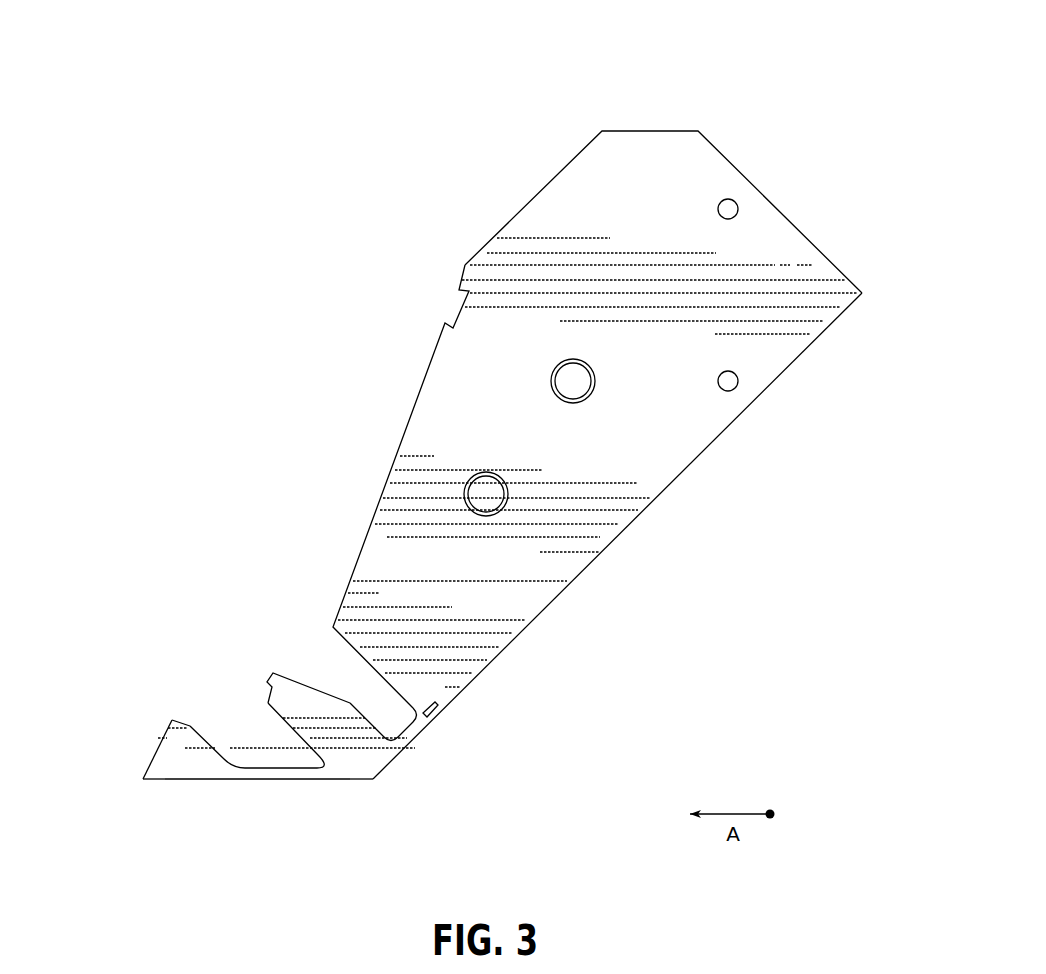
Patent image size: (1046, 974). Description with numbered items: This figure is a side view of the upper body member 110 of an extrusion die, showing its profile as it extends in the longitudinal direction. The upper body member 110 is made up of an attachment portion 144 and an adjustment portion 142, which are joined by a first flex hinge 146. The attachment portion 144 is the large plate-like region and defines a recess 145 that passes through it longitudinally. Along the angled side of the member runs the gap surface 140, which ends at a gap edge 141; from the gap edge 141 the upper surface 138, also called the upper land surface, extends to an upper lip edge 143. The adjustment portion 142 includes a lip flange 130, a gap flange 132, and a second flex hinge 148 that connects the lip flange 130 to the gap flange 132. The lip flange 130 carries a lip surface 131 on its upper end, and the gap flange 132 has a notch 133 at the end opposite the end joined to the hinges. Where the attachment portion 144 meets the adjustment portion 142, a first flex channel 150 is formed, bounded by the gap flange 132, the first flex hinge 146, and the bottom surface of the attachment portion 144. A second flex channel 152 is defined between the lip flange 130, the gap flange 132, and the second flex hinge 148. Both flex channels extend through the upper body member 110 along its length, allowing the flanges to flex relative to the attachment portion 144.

The upper body member 110 is at (822, 130).
The attachment portion 144 is at (673, 449).
The recess 145 is at (452, 302).
The gap surface 140 is at (392, 763).
The first flex hinge 146 is at (422, 733).
The first flex channel 150 is at (345, 672).
The gap flange 132 is at (308, 678).
The notch 133 is at (270, 668).
The second flex channel 152 is at (253, 732).
The adjustment portion 142 is at (328, 770).
The lip surface 131 is at (170, 718).
The lip flange 130 is at (158, 737).
The upper lip edge 143 is at (142, 780).
The upper surface 138 is at (220, 779).
The second flex hinge 148 is at (280, 779).
The gap edge 141 is at (377, 779).